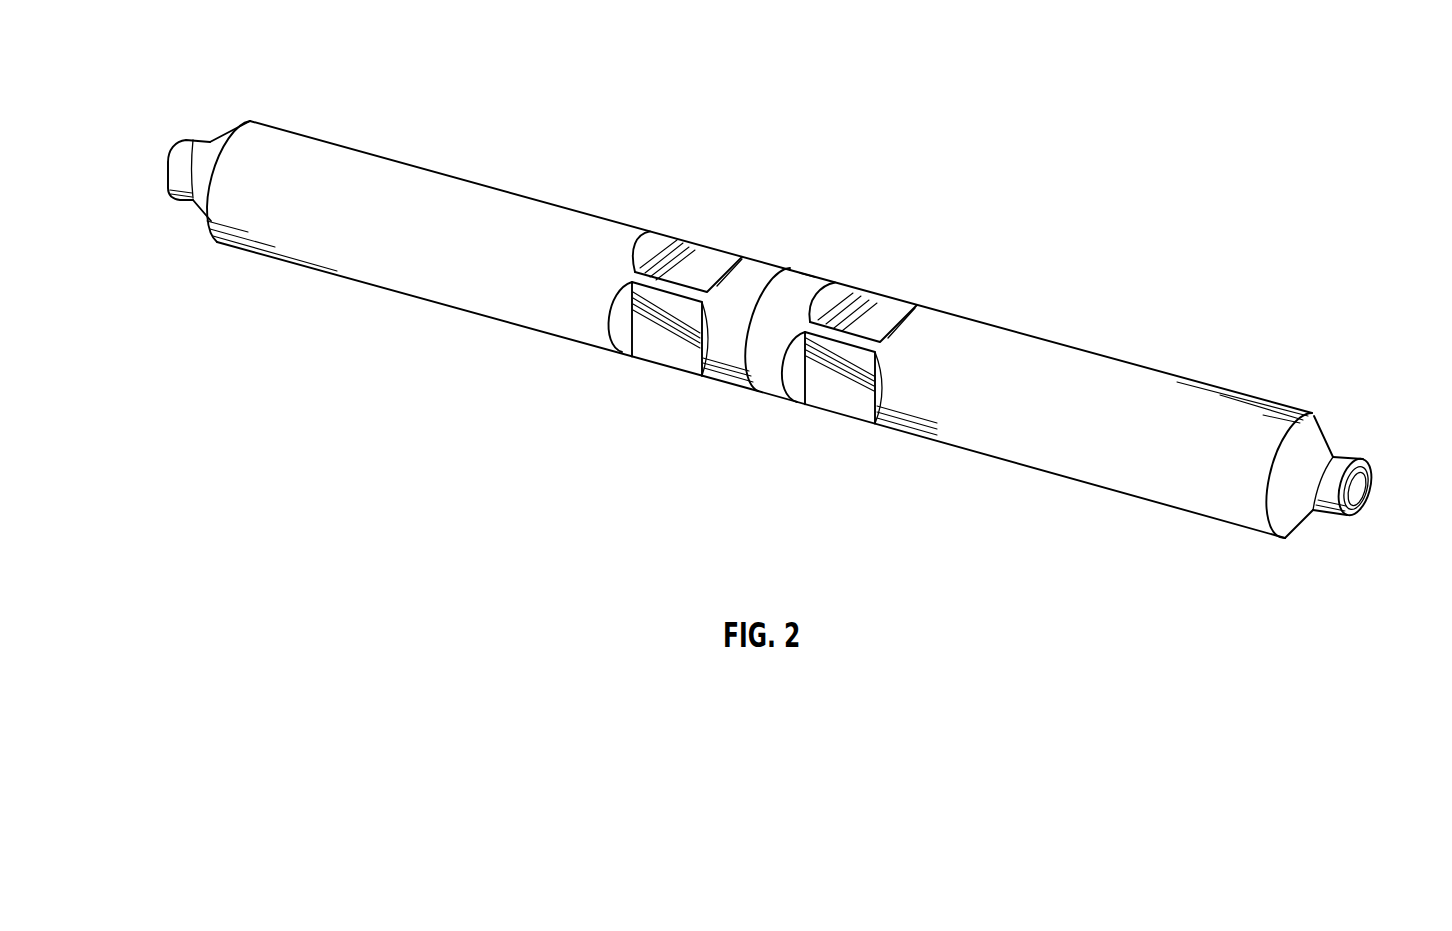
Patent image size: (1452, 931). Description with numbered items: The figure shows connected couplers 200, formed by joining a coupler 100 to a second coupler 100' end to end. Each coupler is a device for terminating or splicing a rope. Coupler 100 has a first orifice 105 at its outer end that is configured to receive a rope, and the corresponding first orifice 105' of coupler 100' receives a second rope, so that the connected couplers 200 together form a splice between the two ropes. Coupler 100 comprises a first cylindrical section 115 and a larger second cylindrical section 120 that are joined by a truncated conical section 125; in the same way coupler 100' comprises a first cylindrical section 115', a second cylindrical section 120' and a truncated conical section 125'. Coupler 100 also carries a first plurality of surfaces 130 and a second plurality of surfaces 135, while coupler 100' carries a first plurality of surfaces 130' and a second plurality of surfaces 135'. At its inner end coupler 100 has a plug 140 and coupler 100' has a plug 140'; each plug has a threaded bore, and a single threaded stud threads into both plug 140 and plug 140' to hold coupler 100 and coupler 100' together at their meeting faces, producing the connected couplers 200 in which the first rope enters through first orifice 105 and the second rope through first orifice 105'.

The connected couplers 200 is at (847, 105).
The coupler 100 is at (520, 159).
The coupler 100' is at (1051, 300).
The first orifice 105 is at (125, 161).
The first orifice 105' is at (1398, 503).
The first cylindrical section 115 is at (173, 125).
The first cylindrical section 115' is at (1348, 456).
The second cylindrical section 120 is at (480, 235).
The second cylindrical section 120' is at (1094, 418).
The truncated conical section 125 is at (218, 148).
The truncated conical section 125' is at (1321, 445).
The first plurality of surfaces 130 is at (678, 314).
The first plurality of surfaces 130' is at (855, 364).
The second plurality of surfaces 135 is at (688, 295).
The second plurality of surfaces 135' is at (823, 332).
The plug 140 is at (784, 276).
The plug 140' is at (839, 213).